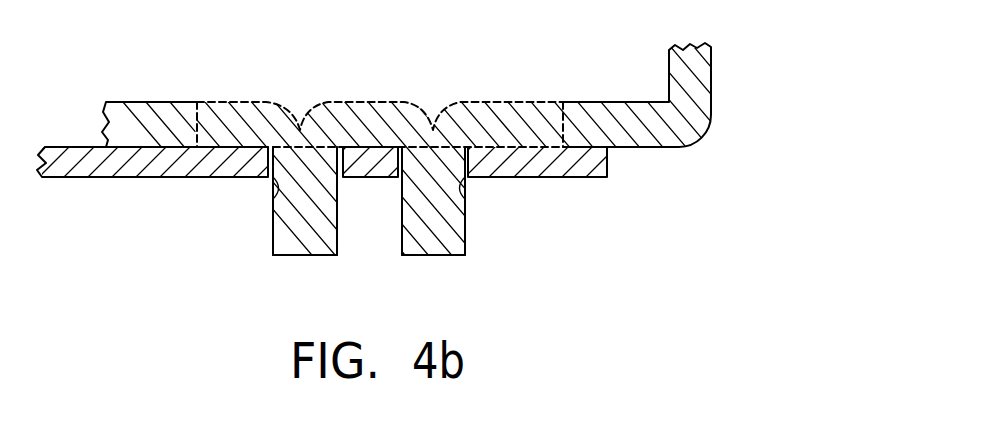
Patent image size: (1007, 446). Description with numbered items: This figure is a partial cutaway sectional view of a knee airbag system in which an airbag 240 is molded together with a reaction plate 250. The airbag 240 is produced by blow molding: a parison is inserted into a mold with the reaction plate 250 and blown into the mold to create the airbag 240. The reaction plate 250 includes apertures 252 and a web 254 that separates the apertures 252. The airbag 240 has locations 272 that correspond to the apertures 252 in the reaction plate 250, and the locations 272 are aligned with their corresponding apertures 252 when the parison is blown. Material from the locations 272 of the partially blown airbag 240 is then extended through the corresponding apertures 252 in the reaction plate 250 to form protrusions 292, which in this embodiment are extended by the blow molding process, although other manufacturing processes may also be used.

The airbag 240 is at (722, 125).
The reaction plate 250 is at (625, 167).
The apertures 252 is at (272, 198).
The web 254 is at (370, 177).
The locations 272 is at (197, 110).
The protrusions 292 is at (300, 255).